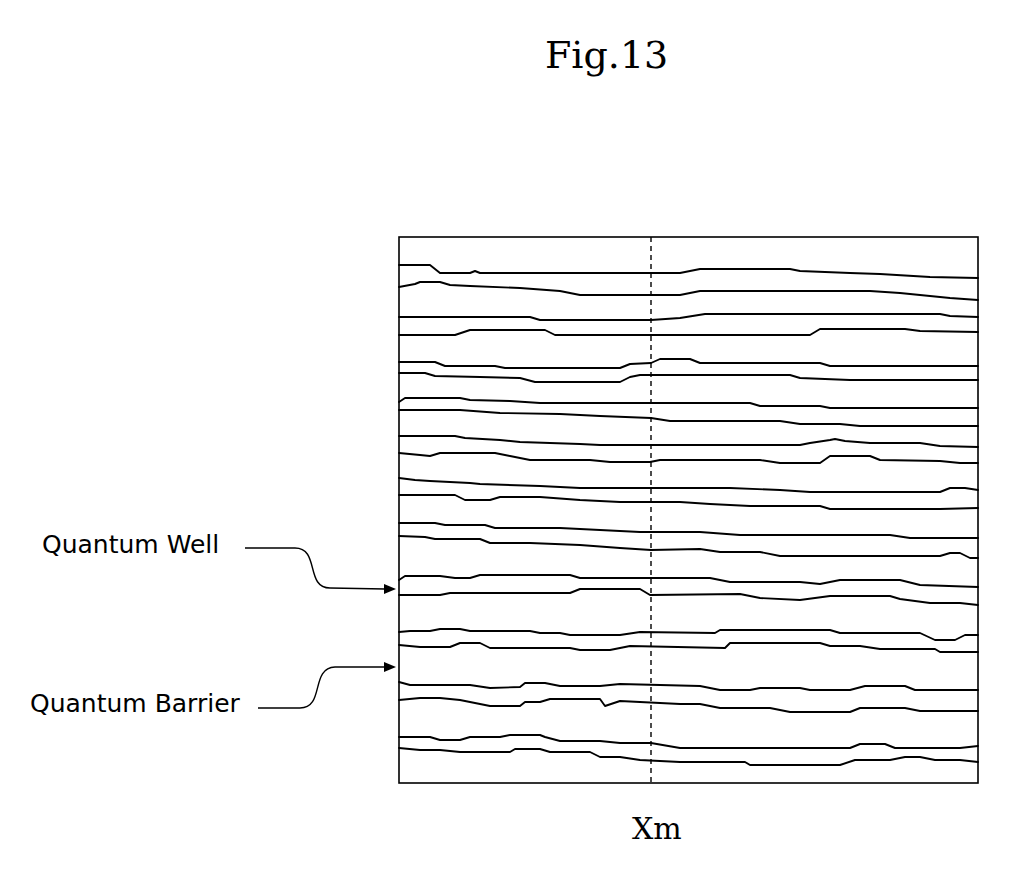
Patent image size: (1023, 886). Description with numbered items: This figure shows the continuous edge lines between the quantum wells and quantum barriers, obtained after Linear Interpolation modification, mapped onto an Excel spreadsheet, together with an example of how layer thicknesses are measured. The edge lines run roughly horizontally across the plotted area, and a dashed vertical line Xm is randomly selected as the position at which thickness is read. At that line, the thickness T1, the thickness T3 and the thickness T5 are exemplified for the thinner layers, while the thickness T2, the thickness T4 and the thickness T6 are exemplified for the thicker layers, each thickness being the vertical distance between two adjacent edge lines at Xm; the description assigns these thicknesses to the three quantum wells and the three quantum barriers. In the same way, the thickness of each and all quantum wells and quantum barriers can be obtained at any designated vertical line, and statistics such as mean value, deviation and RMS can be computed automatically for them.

The thickness of quantum well T1 is at (636, 752).
The thickness of quantum well T2 is at (658, 704).
The thickness of quantum well T3 is at (636, 696).
The thickness of quantum barrier T4 is at (658, 648).
The thickness of quantum barrier T5 is at (636, 641).
The thickness of quantum barrier T6 is at (658, 598).